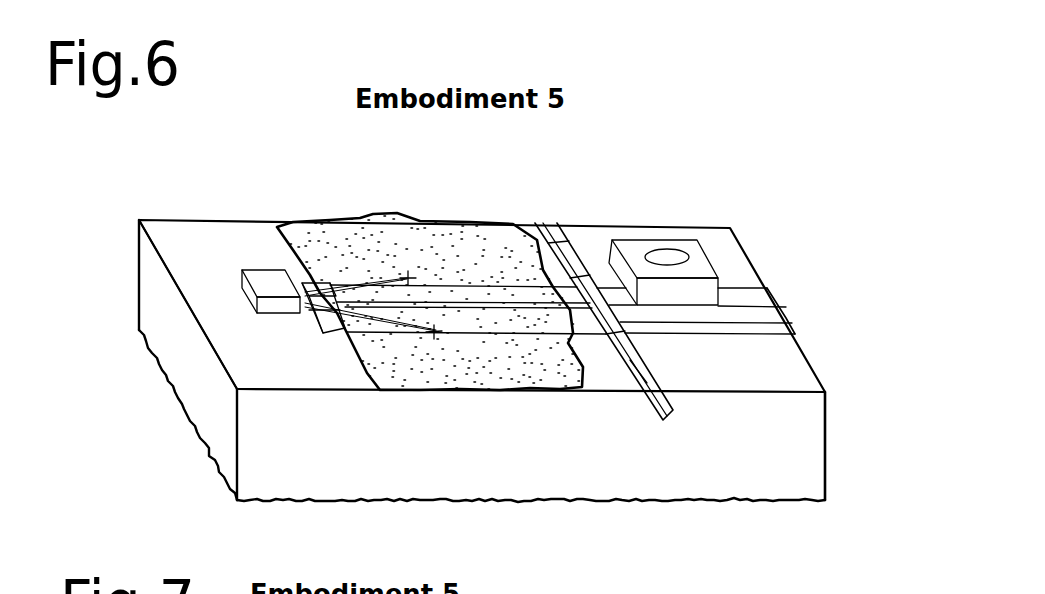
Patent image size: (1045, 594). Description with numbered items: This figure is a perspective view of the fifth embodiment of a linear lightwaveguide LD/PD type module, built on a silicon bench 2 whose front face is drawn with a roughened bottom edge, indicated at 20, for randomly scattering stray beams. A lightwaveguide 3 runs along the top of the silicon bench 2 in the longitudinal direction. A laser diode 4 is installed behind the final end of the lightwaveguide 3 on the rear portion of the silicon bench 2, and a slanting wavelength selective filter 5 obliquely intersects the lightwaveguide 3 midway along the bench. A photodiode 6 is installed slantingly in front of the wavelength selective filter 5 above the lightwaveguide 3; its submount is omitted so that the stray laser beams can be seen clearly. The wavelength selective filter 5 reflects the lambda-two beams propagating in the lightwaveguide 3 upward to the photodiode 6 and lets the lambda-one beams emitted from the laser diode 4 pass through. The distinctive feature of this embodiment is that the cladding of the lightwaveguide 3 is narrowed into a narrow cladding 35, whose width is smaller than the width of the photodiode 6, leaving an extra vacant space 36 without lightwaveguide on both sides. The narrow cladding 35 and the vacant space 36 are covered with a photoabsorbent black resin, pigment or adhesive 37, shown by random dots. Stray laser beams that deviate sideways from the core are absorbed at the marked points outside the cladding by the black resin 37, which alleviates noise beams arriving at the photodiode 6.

The silicon bench 2 is at (222, 408).
The lightwaveguide 3 is at (773, 305).
The laser diode 4 is at (333, 298).
The wavelength selective filter 5 is at (580, 277).
The photodiode 6 is at (693, 252).
The base 20 is at (613, 503).
The narrow cladding 35 is at (253, 272).
The extra vacant space 36 is at (393, 387).
The photoabsorbent resin 37 is at (483, 370).